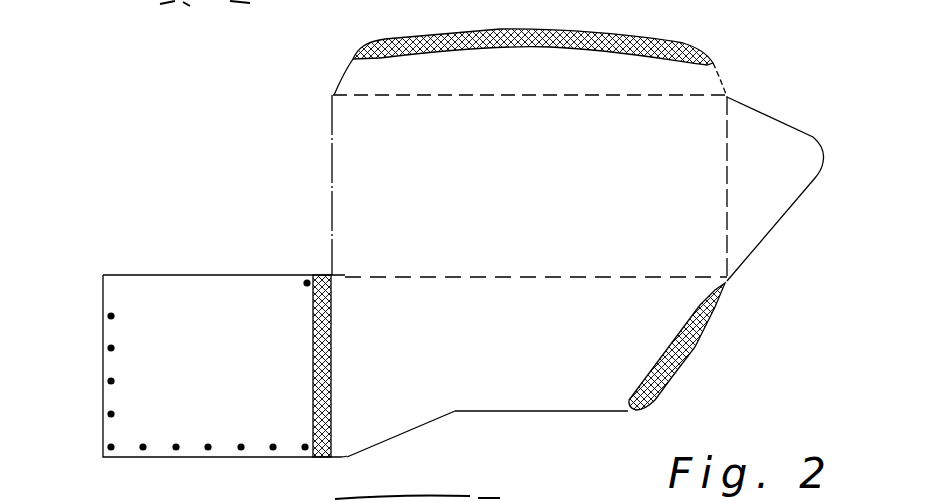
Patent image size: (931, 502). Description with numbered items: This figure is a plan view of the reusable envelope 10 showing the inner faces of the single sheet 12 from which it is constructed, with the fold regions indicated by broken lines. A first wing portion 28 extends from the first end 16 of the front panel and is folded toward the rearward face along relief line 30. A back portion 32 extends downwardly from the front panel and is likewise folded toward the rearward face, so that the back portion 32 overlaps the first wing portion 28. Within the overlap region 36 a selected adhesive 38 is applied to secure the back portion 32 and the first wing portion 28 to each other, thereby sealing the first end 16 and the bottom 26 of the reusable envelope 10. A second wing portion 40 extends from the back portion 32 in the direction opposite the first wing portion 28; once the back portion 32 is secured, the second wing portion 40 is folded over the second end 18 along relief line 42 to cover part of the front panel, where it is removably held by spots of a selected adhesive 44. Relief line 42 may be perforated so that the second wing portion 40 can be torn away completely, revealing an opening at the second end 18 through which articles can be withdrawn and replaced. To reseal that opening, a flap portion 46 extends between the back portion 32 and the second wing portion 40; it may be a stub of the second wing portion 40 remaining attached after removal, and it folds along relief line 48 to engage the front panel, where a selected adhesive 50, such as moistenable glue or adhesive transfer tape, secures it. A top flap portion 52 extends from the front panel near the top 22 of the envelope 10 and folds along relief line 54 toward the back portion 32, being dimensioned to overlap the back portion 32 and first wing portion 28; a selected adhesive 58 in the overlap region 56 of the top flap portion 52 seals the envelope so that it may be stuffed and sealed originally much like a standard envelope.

The reusable envelope 10 is at (203, 128).
The single sheet 12 is at (718, 301).
The first end 16 is at (700, 235).
The second end 18 is at (332, 140).
The top 22 is at (703, 97).
The bottom 26 is at (590, 283).
The first wing portion 28 is at (770, 166).
The relief line 30 is at (727, 180).
The back portion 32 is at (502, 346).
The overlap region 36 is at (678, 356).
The adhesive 38 is at (645, 391).
The second wing portion 40 is at (215, 352).
The relief line 42 is at (313, 310).
The adhesive spots 44 is at (108, 317).
The flap portion 46 is at (327, 387).
The relief line 48 is at (331, 310).
The adhesive 50 is at (320, 431).
The top flap portion 52 is at (532, 86).
The relief line 54 is at (363, 97).
The overlap region 56 is at (350, 55).
The adhesive 58 is at (377, 41).